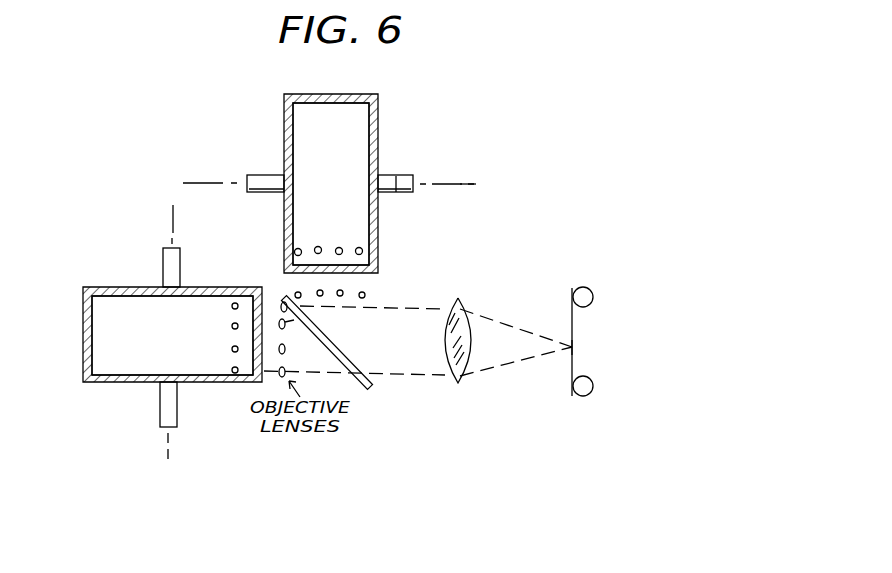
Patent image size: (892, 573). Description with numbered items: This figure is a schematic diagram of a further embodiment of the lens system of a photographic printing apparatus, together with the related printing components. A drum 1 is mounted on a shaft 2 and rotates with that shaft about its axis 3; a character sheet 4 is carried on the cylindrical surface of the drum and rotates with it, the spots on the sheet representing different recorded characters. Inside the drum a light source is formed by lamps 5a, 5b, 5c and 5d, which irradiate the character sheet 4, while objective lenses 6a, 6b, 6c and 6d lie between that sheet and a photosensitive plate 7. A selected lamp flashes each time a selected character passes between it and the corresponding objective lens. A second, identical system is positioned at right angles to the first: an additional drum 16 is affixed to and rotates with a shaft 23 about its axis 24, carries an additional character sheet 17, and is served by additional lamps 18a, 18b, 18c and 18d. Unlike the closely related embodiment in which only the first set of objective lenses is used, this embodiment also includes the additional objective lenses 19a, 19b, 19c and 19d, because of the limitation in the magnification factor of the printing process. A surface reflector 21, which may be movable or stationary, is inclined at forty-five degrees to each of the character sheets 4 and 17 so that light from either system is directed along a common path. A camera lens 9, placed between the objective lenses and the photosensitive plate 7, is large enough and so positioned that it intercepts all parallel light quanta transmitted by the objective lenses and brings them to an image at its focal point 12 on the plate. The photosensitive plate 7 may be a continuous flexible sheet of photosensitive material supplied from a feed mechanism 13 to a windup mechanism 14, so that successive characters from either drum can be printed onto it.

The drum 1 is at (114, 368).
The shaft 2 is at (163, 258).
The axis of the shaft 3 is at (171, 217).
The character sheet 4 is at (266, 292).
The lamp 5a is at (231, 307).
The lamp 5b is at (231, 327).
The lamp 5c is at (231, 350).
The lamp 5d is at (231, 371).
The objective lens 6a is at (275, 316).
The objective lens 6b is at (286, 327).
The objective lens 6c is at (286, 349).
The objective lens 6d is at (287, 372).
The photosensitive plate 7 is at (572, 310).
The camera lens 9 is at (460, 384).
The focal point 12 is at (571, 349).
The feed mechanism 13 is at (594, 386).
The windup mechanism 14 is at (594, 299).
The additional drum 16 is at (369, 118).
The additional character sheet 17 is at (376, 274).
The additional lamp 18a is at (359, 247).
The additional lamp 18b is at (339, 247).
The additional lamp 18c is at (318, 246).
The additional lamp 18d is at (296, 250).
The additional objective lens 19a is at (363, 299).
The additional objective lens 19b is at (352, 287).
The additional objective lens 19c is at (308, 288).
The additional objective lens 19d is at (303, 308).
The surface reflector 21 is at (360, 386).
The shaft 23 is at (397, 183).
The axis of the shaft 24 is at (467, 189).